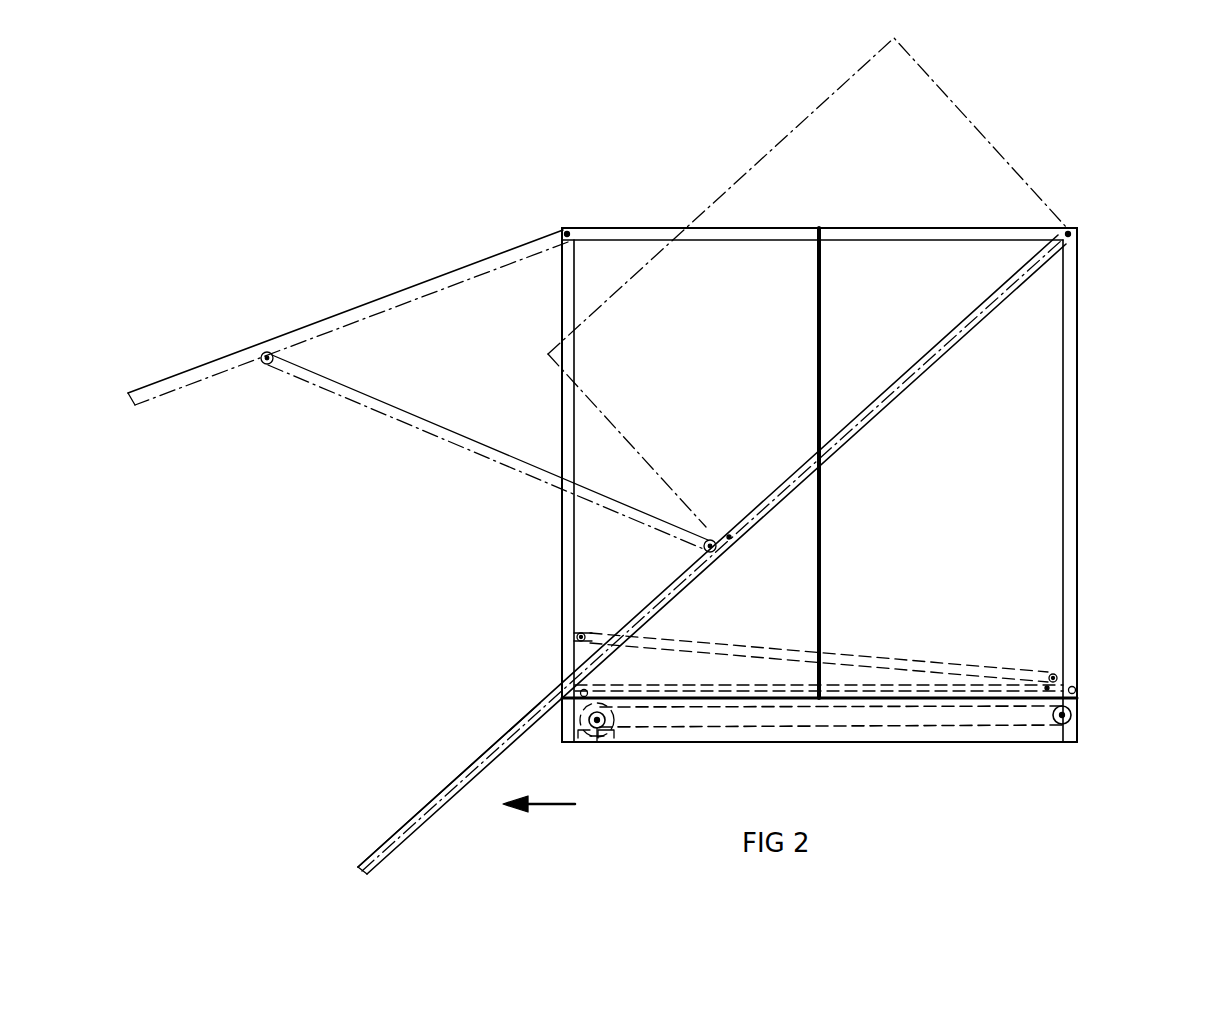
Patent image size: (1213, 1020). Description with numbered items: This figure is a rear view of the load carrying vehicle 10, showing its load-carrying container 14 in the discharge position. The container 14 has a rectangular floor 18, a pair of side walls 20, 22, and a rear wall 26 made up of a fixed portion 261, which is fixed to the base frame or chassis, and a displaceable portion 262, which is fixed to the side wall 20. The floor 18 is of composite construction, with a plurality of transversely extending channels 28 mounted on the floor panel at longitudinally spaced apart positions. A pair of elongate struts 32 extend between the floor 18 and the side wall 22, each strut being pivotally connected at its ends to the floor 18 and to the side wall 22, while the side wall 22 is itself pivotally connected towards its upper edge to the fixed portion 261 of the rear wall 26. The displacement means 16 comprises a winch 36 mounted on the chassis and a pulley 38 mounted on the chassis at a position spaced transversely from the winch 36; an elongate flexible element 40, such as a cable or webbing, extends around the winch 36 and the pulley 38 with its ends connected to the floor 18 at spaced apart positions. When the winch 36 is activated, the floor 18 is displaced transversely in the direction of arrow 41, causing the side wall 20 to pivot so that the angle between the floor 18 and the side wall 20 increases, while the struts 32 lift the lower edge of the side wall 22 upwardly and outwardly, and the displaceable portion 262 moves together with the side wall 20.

The load carrying vehicle 10 is at (1163, 140).
The load-carrying container 14 is at (537, 214).
The displacement means 16 is at (866, 733).
The floor 18 is at (693, 668).
The side wall 20 is at (995, 292).
The side wall 22 is at (250, 350).
The rear wall 26 is at (890, 214).
The fixed portion 261 is at (630, 254).
The displaceable portion 262 is at (833, 133).
The channels 28 is at (445, 776).
The struts 32 is at (485, 454).
The winch 36 is at (605, 745).
The pulley 38 is at (1070, 715).
The flexible element 40 is at (978, 728).
The arrow 41 is at (553, 805).